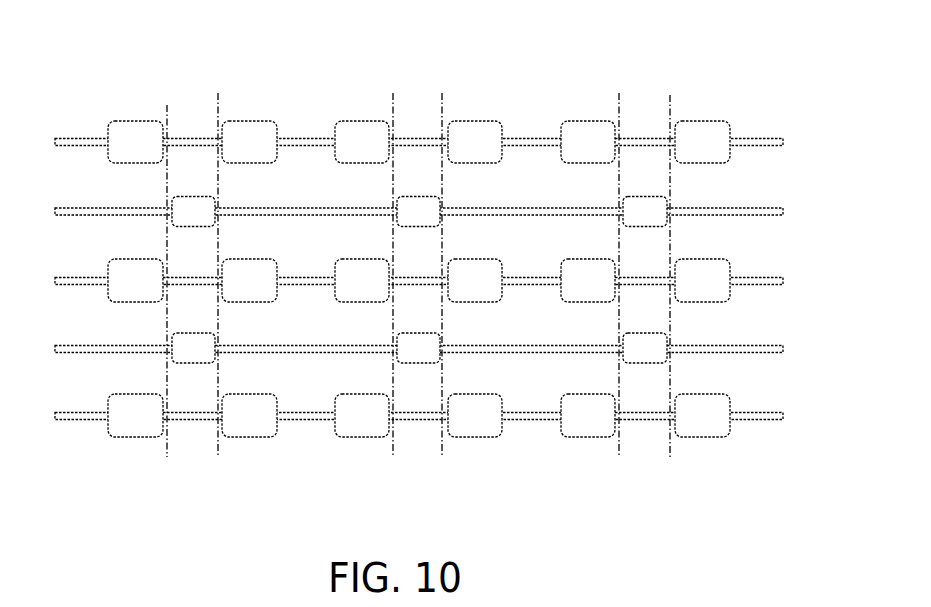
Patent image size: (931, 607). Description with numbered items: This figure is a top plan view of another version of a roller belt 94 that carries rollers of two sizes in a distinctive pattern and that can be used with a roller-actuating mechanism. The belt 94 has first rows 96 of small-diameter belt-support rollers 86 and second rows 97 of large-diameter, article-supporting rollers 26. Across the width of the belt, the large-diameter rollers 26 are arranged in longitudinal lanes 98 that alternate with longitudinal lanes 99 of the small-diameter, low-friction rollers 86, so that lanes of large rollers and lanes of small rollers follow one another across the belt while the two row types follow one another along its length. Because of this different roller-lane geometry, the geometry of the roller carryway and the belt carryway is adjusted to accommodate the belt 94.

The roller belt 94 is at (592, 56).
The second rows 97 is at (788, 125).
The first rows 96 is at (788, 193).
The longitudinal lanes 98 is at (426, 86).
The longitudinal lanes 99 is at (416, 60).
The large-diameter, article-supporting rollers 26 is at (490, 155).
The small-diameter belt-support rollers 86 is at (430, 223).